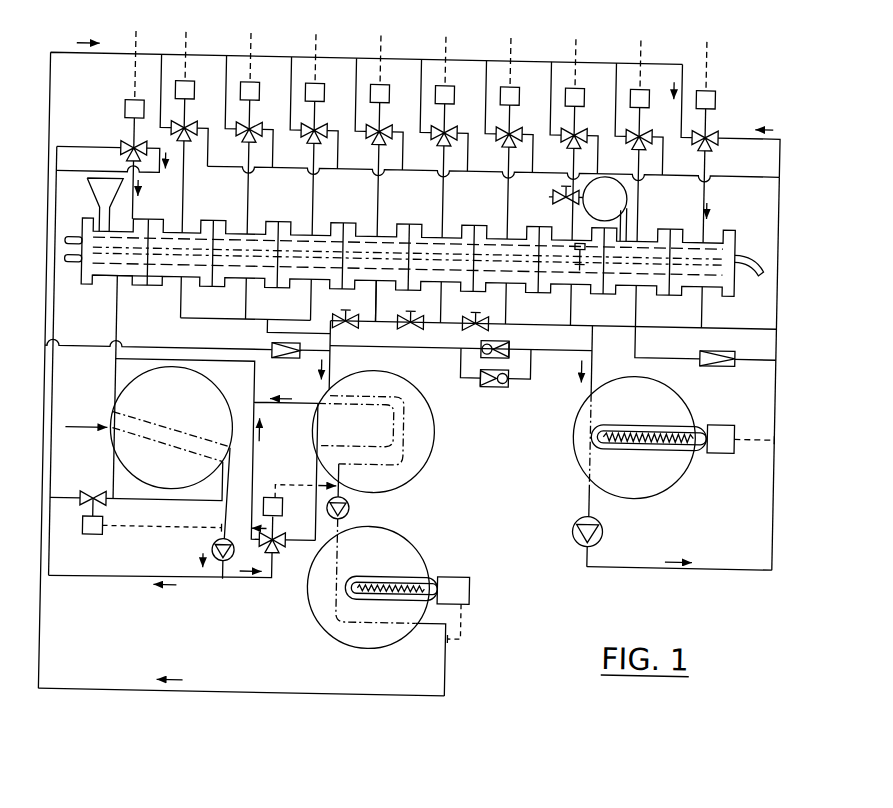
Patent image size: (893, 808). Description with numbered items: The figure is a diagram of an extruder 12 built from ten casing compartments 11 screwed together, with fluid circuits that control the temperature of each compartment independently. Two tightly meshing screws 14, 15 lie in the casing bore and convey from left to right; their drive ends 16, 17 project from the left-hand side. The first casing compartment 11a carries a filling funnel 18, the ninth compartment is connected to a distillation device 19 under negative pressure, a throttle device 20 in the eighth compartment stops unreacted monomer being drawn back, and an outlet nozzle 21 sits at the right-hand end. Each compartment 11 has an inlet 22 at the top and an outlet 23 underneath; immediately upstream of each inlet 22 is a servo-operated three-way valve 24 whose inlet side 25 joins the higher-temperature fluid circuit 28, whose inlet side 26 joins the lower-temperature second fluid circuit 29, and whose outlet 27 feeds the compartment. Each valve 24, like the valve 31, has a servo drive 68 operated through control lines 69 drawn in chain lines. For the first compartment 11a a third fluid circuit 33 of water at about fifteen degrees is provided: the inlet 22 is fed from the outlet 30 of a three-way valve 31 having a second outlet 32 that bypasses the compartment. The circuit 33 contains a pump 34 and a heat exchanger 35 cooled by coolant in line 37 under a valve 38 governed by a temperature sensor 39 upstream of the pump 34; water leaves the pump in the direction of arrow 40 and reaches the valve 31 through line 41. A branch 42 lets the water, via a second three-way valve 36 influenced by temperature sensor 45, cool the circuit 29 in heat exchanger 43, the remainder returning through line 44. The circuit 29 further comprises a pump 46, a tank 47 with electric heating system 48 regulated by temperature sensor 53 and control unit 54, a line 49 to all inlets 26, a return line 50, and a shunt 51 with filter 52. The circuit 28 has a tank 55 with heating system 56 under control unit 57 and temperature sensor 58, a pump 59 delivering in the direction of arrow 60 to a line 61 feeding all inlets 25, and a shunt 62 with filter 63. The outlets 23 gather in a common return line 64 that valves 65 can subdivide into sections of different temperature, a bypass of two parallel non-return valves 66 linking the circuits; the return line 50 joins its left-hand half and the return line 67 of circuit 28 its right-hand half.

The casing compartment 11 is at (186, 236).
The first casing compartment 11a is at (131, 284).
The extruder 12 is at (716, 208).
The screw 14 is at (382, 237).
The screw 15 is at (377, 292).
The drive end 16 is at (70, 244).
The drive end 17 is at (70, 269).
The filling funnel 18 is at (90, 198).
The distillation device 19 is at (592, 206).
The throttle device 20 is at (578, 272).
The outlet nozzle 21 is at (748, 258).
The inlet 22 is at (135, 213).
The outlet 23 is at (247, 316).
The three-way valve 24 is at (706, 131).
The inlet side 25 is at (713, 134).
The inlet side 26 is at (694, 141).
The outlet 27 is at (709, 146).
The fluid circuit 28 is at (723, 576).
The second fluid circuit 29 is at (463, 673).
The outlet 30 is at (116, 159).
The three-way valve 31 is at (124, 151).
The second outlet 32 is at (141, 153).
The third fluid circuit 33 is at (121, 587).
The pump 34 is at (214, 553).
The heat exchanger 35 is at (207, 387).
The second three-way valve 36 is at (285, 536).
The coolant line 37 is at (74, 430).
The valve 38 is at (95, 498).
The temperature sensor 39 is at (219, 531).
The arrow 40 is at (204, 570).
The line 41 is at (54, 558).
The branch 42 is at (251, 584).
The heat exchanger 43 is at (399, 377).
The line 44 is at (256, 450).
The temperature sensor 45 is at (316, 489).
The pump 46 is at (352, 510).
The tank 47 is at (418, 545).
The electric heating system 48 is at (432, 577).
The line 49 is at (92, 695).
The return line 50 is at (331, 368).
The shunt 51 is at (211, 353).
The filter 52 is at (288, 362).
The temperature sensor 53 is at (453, 646).
The control unit 54 is at (474, 587).
The tank 55 is at (684, 468).
The heating system 56 is at (649, 421).
The control unit 57 is at (720, 420).
The temperature sensor 58 is at (766, 430).
The pump 59 is at (606, 530).
The arrow 60 is at (676, 555).
The line 61 is at (775, 330).
The shunt 62 is at (646, 354).
The filter 63 is at (712, 346).
The common return line 64 is at (284, 322).
The valve 65 is at (345, 316).
The non-return valve 66 is at (509, 347).
The return line 67 is at (594, 372).
The servo drive 68 is at (712, 90).
The control line 69 is at (709, 53).